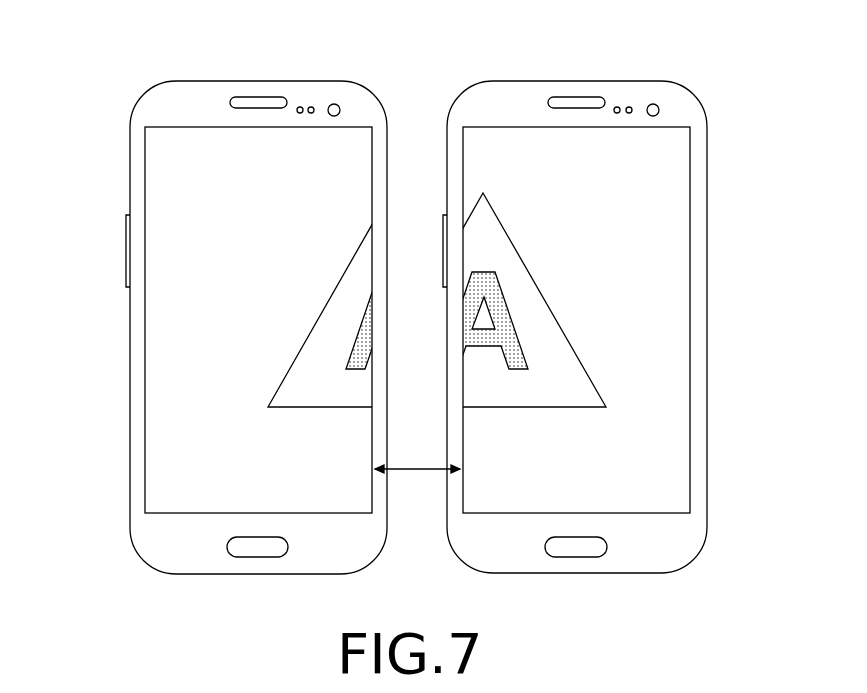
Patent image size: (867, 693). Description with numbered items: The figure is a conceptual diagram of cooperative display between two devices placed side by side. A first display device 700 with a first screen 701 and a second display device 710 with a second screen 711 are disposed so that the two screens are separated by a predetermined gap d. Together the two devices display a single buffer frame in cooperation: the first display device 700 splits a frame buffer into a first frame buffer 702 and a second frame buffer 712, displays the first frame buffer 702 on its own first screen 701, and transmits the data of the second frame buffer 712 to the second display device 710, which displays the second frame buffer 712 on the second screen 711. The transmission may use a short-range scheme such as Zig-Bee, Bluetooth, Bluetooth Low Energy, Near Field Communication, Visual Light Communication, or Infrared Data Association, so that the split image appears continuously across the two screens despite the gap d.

The first display device 700 is at (256, 81).
The first screen 701 is at (181, 124).
The first frame buffer 702 is at (162, 357).
The second display device 710 is at (574, 81).
The second screen 711 is at (498, 124).
The second frame buffer 712 is at (676, 358).
The predetermined gap d is at (417, 459).